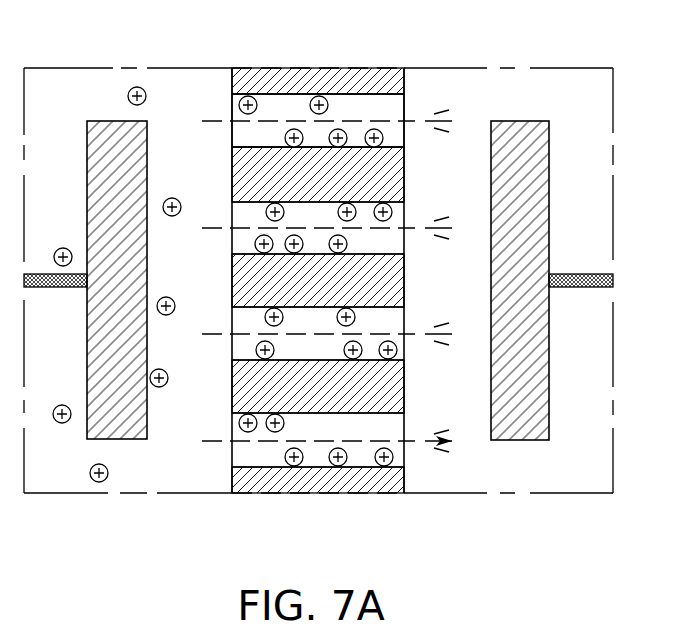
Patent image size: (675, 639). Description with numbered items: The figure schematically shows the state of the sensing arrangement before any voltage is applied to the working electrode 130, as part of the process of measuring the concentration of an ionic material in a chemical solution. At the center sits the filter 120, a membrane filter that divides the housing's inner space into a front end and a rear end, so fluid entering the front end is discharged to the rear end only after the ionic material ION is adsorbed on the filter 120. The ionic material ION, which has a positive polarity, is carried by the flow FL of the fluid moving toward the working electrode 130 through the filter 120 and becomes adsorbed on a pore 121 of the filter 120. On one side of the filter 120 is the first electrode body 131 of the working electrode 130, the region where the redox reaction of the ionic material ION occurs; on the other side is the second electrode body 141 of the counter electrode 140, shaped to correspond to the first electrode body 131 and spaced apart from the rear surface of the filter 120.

The filter 120 is at (310, 486).
The pore 121 is at (370, 107).
The first electrode body 131 is at (122, 432).
The working electrode 130 is at (97, 423).
The second electrode body 141 is at (517, 428).
The counter electrode 140 is at (555, 423).
The flow FL is at (423, 121).
The ionic material ION is at (99, 482).